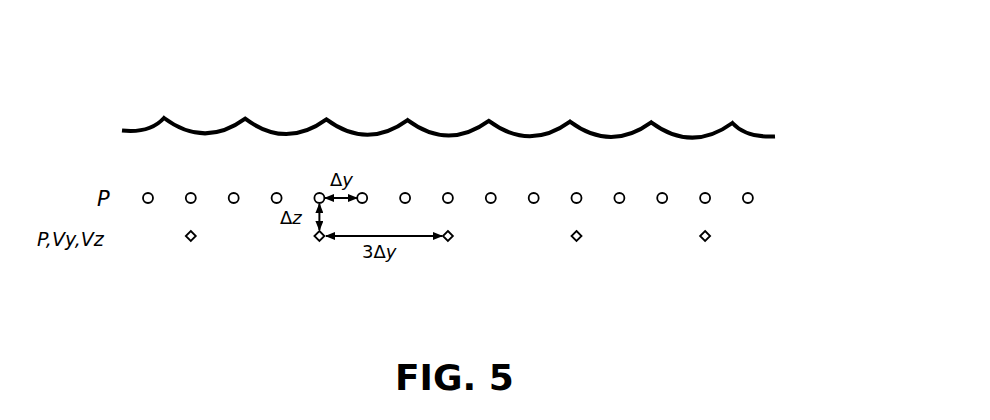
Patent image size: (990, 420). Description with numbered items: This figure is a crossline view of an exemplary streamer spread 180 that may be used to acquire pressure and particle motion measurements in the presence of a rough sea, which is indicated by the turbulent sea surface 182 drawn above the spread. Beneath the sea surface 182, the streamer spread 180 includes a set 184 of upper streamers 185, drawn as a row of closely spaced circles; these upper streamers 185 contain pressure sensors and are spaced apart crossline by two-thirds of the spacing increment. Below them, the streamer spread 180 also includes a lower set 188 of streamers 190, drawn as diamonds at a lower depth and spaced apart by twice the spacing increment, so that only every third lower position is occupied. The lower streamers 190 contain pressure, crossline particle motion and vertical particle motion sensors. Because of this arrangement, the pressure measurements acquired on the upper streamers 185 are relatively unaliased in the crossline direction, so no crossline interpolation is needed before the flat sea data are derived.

The streamer spread 180 is at (892, 86).
The turbulent sea surface 182 is at (448, 95).
The set of upper streamers 184 is at (766, 170).
The upper streamer 185 is at (546, 127).
The lower set of streamers 188 is at (724, 250).
The lower streamer 190 is at (423, 296).